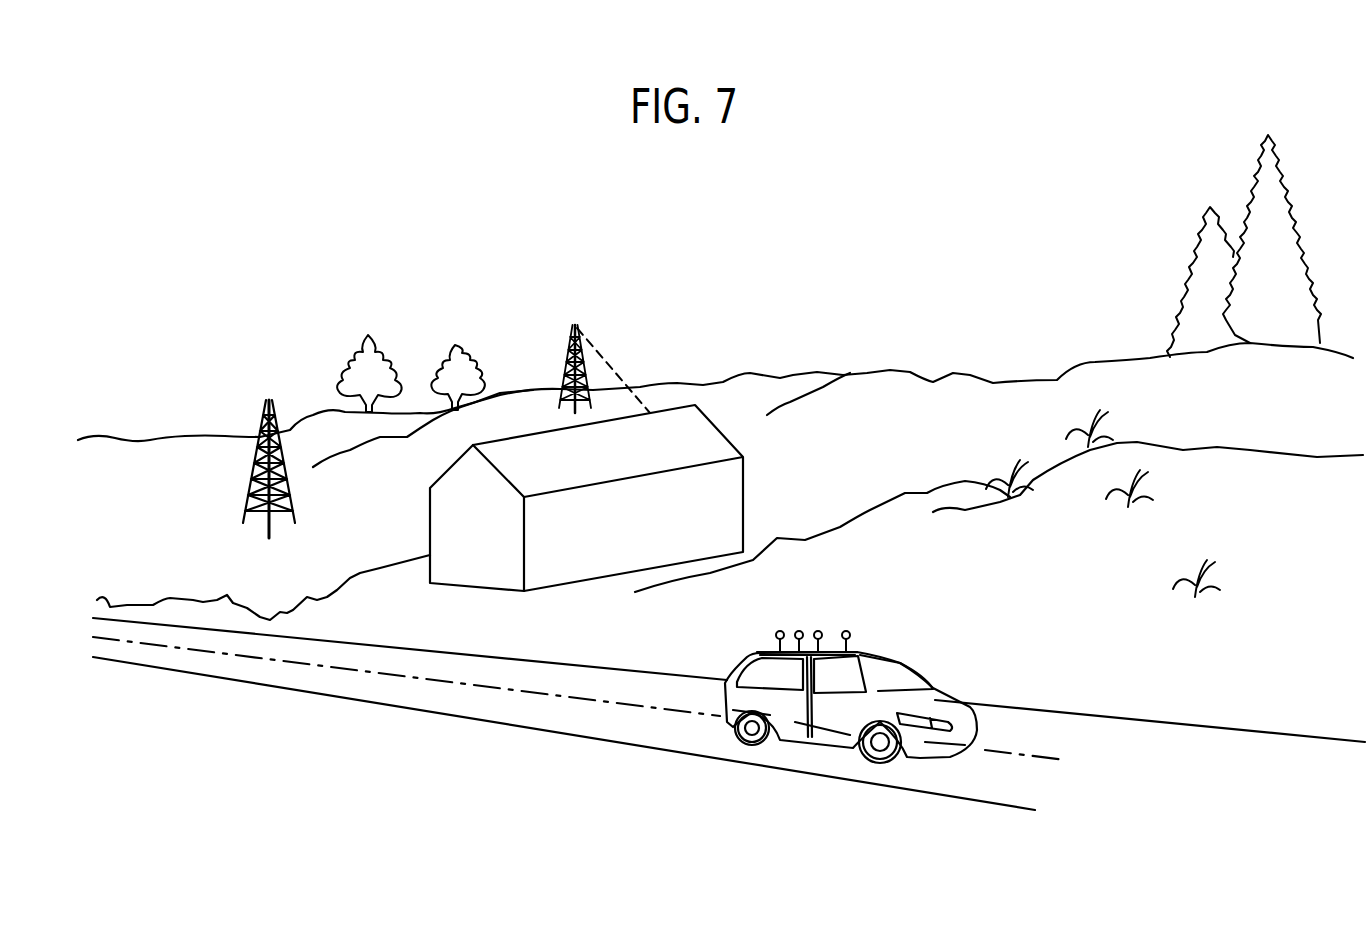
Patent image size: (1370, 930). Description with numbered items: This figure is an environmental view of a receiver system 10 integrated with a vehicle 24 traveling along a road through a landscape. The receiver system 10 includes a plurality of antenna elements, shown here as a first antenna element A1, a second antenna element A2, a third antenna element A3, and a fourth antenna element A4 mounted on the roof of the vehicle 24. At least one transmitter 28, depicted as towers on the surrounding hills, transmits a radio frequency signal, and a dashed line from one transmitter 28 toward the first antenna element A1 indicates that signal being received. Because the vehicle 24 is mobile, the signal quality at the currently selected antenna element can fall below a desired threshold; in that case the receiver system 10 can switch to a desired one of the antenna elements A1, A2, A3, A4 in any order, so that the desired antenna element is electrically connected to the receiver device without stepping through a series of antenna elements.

The receiver system 10 is at (403, 158).
The transmitter 28 is at (265, 412).
The vehicle 24 is at (897, 665).
The first antenna element A1 is at (275, 401).
The second antenna element A2 is at (853, 632).
The third antenna element A3 is at (785, 628).
The fourth antenna element A4 is at (820, 628).